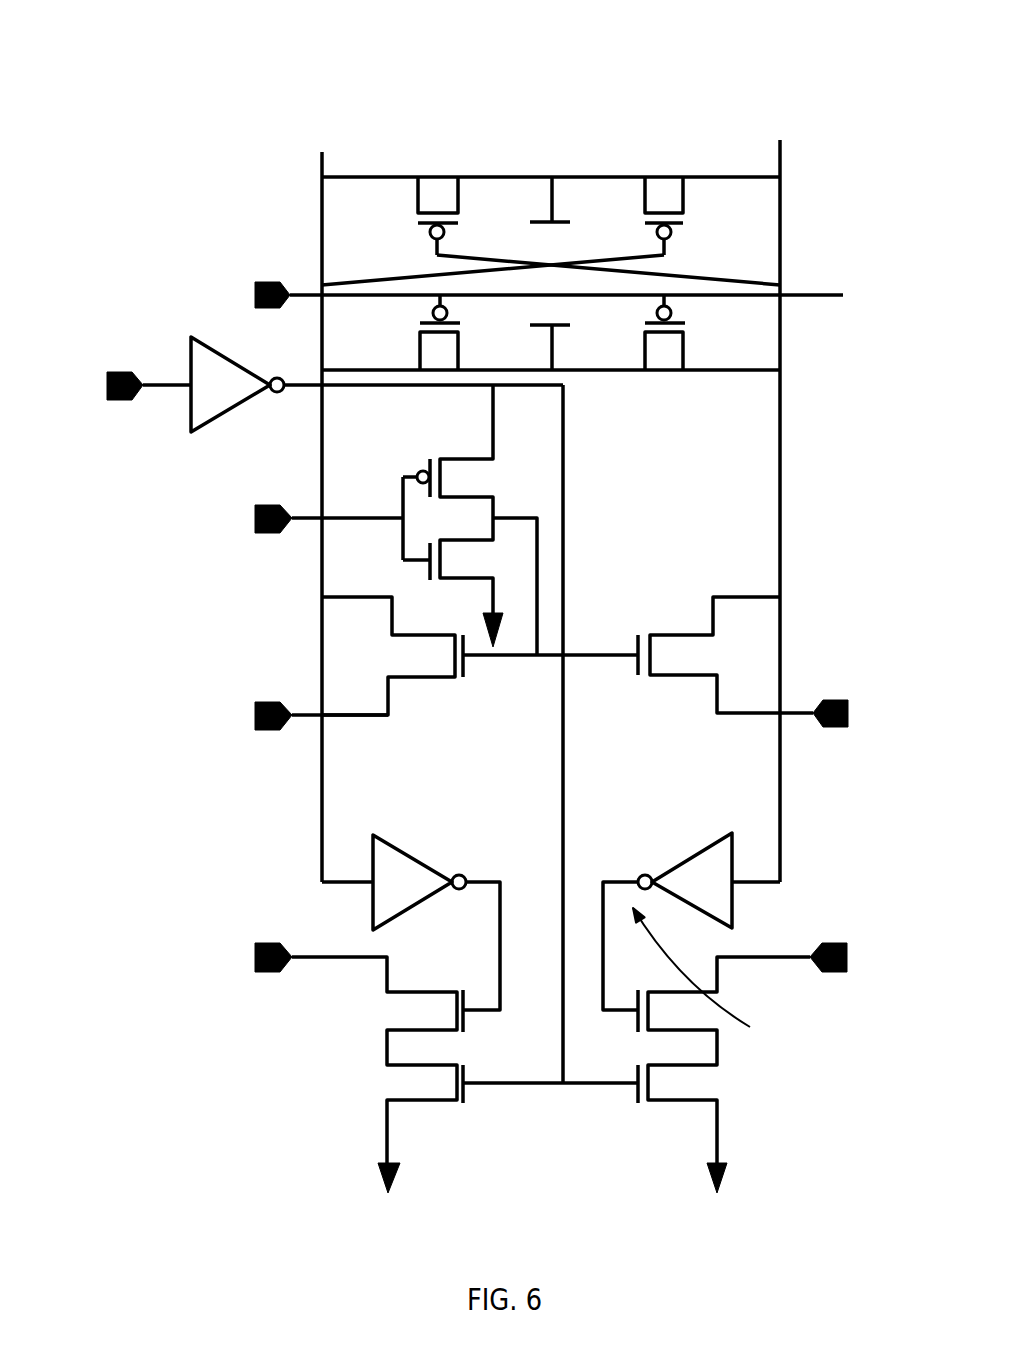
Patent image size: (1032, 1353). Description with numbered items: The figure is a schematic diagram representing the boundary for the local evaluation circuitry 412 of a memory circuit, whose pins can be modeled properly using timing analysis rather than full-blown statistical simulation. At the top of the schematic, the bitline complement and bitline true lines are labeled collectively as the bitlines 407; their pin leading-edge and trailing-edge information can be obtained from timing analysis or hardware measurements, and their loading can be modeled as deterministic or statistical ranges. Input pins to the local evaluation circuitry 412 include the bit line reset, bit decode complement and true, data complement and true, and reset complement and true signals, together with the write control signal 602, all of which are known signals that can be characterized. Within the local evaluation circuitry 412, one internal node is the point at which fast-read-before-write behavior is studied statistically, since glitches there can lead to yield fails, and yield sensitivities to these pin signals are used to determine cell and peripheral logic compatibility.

The local evaluation circuitry 412 is at (520, 43).
The bitlines 407 is at (773, 142).
The write control (wc) signal 602 is at (190, 517).